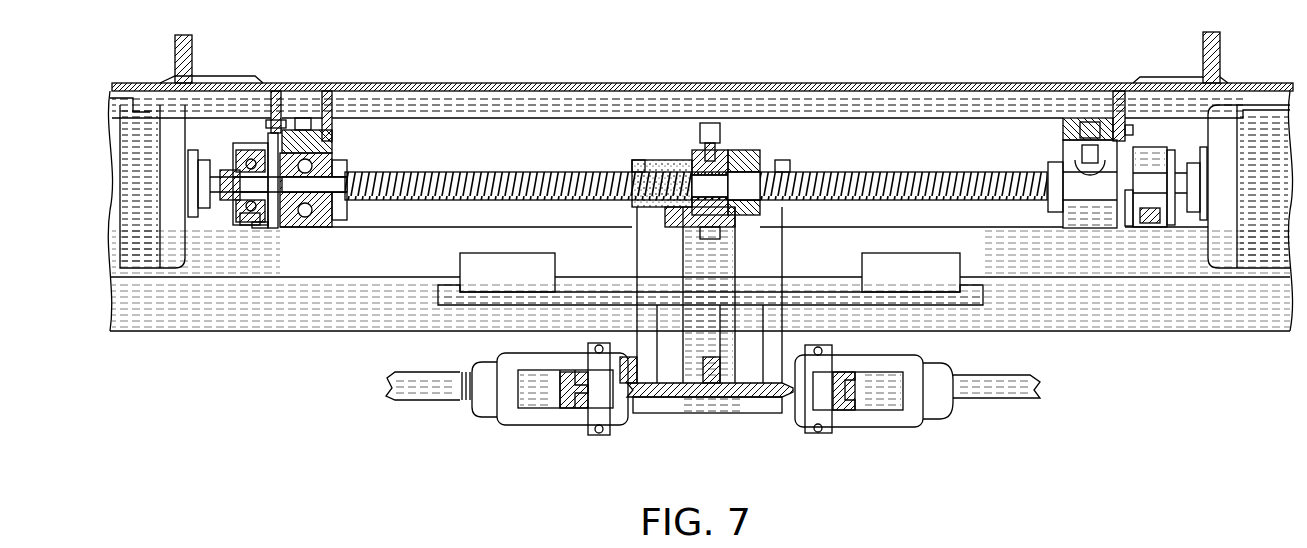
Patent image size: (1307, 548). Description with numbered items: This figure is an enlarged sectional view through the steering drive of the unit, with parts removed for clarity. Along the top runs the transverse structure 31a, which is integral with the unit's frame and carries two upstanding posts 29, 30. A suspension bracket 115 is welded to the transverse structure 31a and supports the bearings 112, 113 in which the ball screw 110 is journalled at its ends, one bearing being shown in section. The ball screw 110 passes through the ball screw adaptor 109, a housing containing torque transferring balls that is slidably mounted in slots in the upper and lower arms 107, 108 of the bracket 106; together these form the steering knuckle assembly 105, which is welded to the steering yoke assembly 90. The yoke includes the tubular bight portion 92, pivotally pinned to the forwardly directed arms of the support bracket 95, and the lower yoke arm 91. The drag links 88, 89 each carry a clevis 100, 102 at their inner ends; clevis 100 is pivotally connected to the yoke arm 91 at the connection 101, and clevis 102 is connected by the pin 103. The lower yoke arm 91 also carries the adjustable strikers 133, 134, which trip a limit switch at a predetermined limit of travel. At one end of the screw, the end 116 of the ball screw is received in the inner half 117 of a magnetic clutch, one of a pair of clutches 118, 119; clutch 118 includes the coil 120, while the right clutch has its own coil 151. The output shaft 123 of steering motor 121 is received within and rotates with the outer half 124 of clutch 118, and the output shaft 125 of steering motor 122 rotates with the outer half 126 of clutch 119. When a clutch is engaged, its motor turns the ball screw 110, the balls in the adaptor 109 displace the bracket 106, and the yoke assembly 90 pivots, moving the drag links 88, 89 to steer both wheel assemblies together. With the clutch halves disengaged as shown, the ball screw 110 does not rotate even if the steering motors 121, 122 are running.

The post 29 is at (192, 53).
The post 30 is at (1160, 78).
The transverse structure 31a is at (456, 83).
The drag link 88 is at (438, 392).
The drag link 89 is at (1012, 398).
The steering yoke assembly 90 is at (720, 405).
The lower yoke arm 91 is at (633, 410).
The tubular bight portion 92 is at (738, 280).
The support bracket 95 is at (645, 268).
The clevis 100 is at (524, 420).
The pivotal connection 101 is at (596, 436).
The clevis 102 is at (908, 420).
The pin 103 is at (812, 433).
The steering knuckle assembly 105 is at (800, 157).
The bracket 106 is at (752, 152).
The upper arm 107 is at (680, 142).
The lower arm 108 is at (678, 218).
The ball screw adaptor 109 is at (637, 165).
The ball screw 110 is at (958, 173).
The bearing 112 is at (318, 225).
The bearing 113 is at (1088, 228).
The suspension bracket 115 is at (332, 100).
The end of ball screw 116 is at (276, 228).
The inner half of magnetic clutch 117 is at (250, 150).
The magnetic clutch 118 is at (248, 230).
The magnetic clutch 119 is at (1133, 232).
The coil 120 is at (258, 228).
The steering motor 121 is at (145, 258).
The steering motor 122 is at (1270, 258).
The output shaft 123 is at (188, 178).
The outer half of magnetic clutch 124 is at (232, 215).
The output shaft 125 is at (1185, 183).
The outer half of magnetic clutch 126 is at (1170, 153).
The striker 133 is at (462, 263).
The striker 134 is at (930, 258).
The right clutch coil 151 is at (1147, 227).